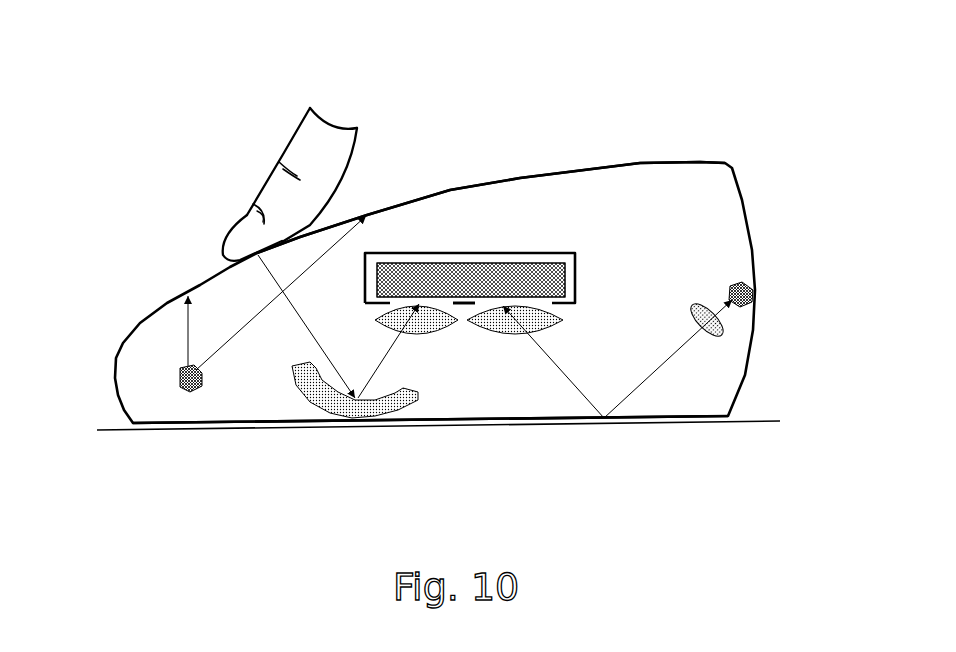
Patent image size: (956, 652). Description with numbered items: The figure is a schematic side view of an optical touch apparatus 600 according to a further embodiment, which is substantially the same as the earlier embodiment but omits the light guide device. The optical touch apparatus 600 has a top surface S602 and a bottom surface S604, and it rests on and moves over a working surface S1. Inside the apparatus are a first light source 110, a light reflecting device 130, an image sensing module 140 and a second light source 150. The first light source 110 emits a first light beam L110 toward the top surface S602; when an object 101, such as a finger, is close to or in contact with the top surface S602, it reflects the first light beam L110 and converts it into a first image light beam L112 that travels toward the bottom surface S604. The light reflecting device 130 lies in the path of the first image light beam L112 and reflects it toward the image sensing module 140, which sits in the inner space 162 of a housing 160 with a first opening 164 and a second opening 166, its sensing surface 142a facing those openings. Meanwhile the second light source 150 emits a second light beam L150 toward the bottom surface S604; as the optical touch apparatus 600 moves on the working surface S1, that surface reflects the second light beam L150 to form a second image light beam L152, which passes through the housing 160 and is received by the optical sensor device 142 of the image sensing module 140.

The optical touch apparatus 600 is at (417, 78).
The object 101 is at (278, 196).
The first light source 110 is at (178, 374).
The light reflecting device 130 is at (340, 425).
The image sensing module 140 is at (470, 200).
The optical sensor device 142 is at (482, 253).
The sensing surface 142a is at (487, 298).
The second light source 150 is at (754, 292).
The housing 160 is at (527, 253).
The inner space 162 is at (577, 286).
The first opening 164 is at (437, 253).
The second opening 166 is at (518, 253).
The first light beam L110 is at (188, 323).
The first image light beam L112 is at (290, 300).
The second light beam L150 is at (650, 385).
The second image light beam L152 is at (570, 383).
The top surface S602 is at (641, 162).
The bottom surface S604 is at (183, 420).
The working surface S1 is at (748, 418).